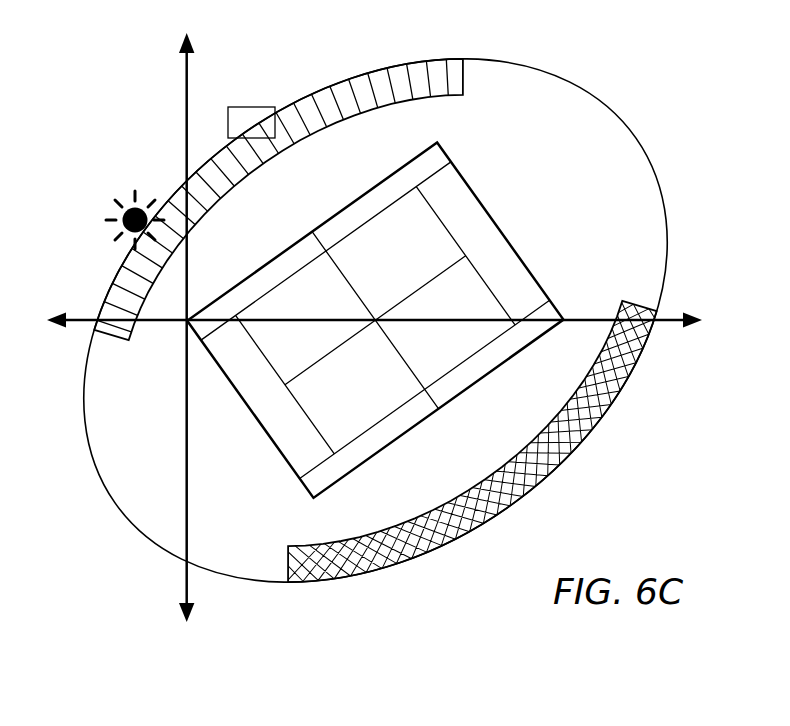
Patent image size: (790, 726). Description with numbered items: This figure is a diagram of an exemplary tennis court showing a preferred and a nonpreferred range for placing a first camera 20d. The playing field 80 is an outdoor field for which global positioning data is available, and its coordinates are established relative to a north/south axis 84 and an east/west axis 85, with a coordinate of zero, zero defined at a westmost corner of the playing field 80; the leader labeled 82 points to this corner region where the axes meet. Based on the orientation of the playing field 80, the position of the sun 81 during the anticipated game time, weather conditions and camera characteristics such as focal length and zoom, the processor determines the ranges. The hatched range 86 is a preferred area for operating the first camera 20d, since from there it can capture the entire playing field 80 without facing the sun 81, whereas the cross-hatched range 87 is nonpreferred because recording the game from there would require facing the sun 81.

The playing field 80 is at (473, 240).
The sun 81 is at (125, 203).
The origin reference point 82 is at (192, 330).
The north/south axis 84 is at (189, 87).
The east/west axis 85 is at (665, 322).
The range 86 is at (428, 72).
The range 87 is at (582, 433).
The first camera 20d is at (251, 122).